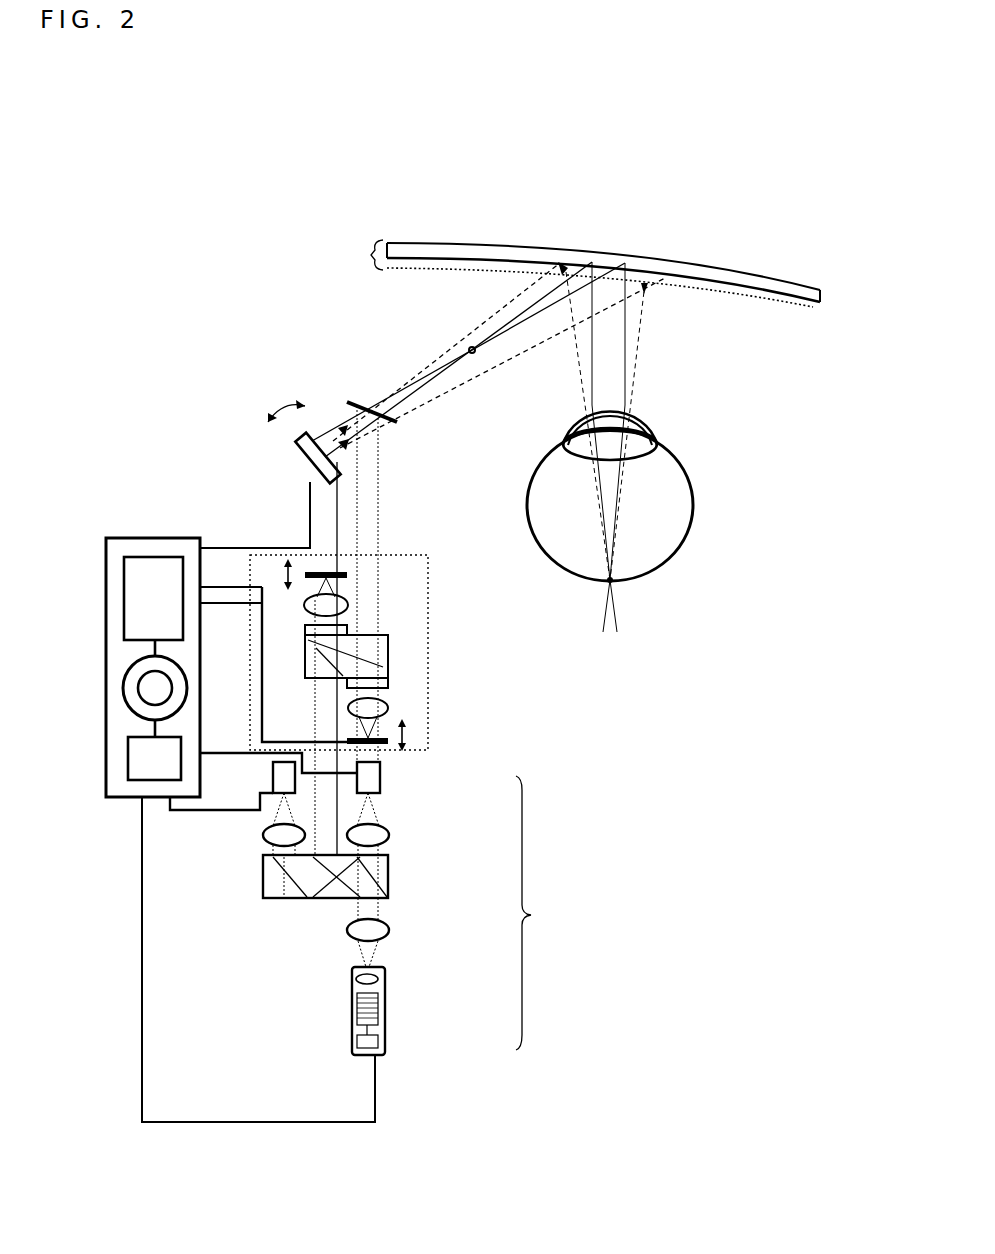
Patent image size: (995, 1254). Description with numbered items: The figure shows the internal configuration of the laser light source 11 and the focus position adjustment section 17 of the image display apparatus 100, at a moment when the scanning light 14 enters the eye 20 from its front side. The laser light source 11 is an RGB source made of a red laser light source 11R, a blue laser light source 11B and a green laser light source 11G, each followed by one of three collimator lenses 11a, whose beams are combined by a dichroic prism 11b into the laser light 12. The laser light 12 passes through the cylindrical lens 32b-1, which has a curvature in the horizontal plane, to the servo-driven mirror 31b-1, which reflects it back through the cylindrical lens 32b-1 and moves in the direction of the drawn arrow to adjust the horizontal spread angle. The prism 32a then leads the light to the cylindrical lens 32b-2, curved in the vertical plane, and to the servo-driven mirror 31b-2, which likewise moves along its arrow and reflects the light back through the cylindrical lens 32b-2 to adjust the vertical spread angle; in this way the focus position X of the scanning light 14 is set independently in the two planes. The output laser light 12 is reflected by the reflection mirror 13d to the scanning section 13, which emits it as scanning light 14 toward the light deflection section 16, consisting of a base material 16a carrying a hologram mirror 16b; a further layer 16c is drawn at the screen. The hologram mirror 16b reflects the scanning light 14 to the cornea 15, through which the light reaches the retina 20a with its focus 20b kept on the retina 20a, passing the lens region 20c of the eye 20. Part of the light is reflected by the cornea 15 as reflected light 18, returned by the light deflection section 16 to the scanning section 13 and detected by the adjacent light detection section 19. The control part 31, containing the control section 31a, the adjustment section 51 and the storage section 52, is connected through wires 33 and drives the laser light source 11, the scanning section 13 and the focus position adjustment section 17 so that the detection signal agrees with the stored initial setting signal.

The image display apparatus 100 is at (333, 129).
The light deflection section 16 is at (371, 248).
The base material 16a is at (787, 290).
The hologram mirror 16b is at (777, 296).
The reflective layer 16c is at (788, 310).
The scanning light 14 is at (535, 297).
The focus position X is at (474, 355).
The reflected light 18 is at (640, 302).
The reflection mirror 13d is at (368, 410).
The scanning section 13 is at (294, 446).
The light detection section 19 is at (308, 472).
The wires 33 is at (213, 547).
The control part 31 is at (106, 600).
The control section 31a is at (124, 584).
The adjustment section 51 is at (123, 687).
The storage section 52 is at (128, 765).
The focus position adjustment section 17 is at (428, 653).
The laser light 12 is at (315, 693).
The servo-driven mirror 31b-1 is at (348, 575).
The cylindrical lens 32b-1 is at (348, 607).
The prism 32a is at (388, 658).
The cylindrical lens 32b-2 is at (388, 708).
The servo-driven mirror 31b-2 is at (388, 741).
The laser light source 11 is at (540, 913).
The red laser light source 11R is at (282, 777).
The blue laser light source 11B is at (371, 774).
The green laser light source 11G is at (387, 985).
The collimator lenses 11a is at (303, 836).
The dichroic prism 11b is at (263, 877).
The eye 20 is at (700, 515).
The cornea 15 is at (630, 408).
The crystalline lens 20c is at (632, 447).
The retina 20a is at (547, 556).
The focus 20b is at (615, 582).